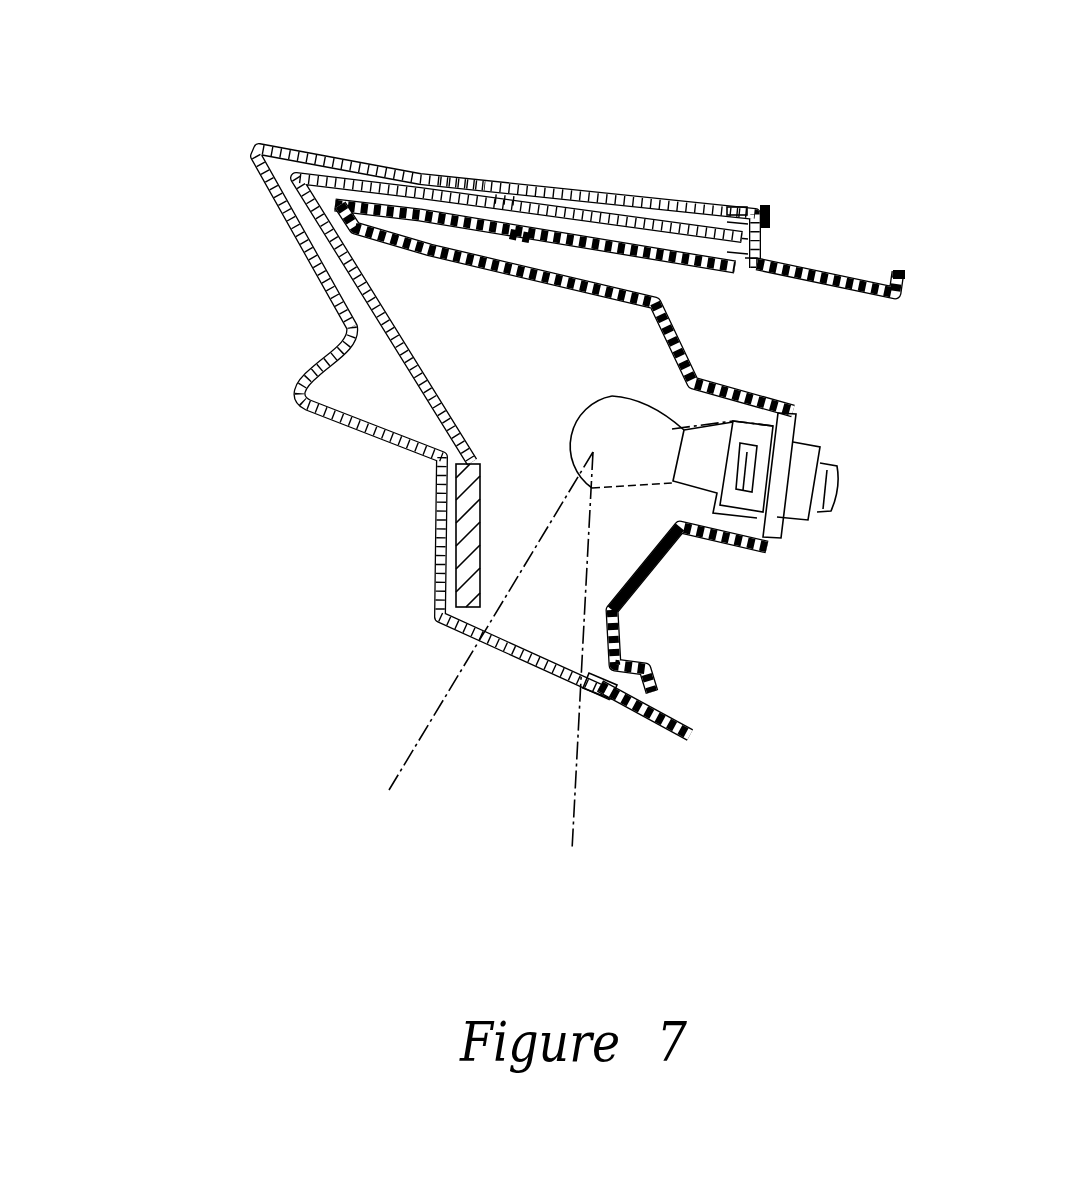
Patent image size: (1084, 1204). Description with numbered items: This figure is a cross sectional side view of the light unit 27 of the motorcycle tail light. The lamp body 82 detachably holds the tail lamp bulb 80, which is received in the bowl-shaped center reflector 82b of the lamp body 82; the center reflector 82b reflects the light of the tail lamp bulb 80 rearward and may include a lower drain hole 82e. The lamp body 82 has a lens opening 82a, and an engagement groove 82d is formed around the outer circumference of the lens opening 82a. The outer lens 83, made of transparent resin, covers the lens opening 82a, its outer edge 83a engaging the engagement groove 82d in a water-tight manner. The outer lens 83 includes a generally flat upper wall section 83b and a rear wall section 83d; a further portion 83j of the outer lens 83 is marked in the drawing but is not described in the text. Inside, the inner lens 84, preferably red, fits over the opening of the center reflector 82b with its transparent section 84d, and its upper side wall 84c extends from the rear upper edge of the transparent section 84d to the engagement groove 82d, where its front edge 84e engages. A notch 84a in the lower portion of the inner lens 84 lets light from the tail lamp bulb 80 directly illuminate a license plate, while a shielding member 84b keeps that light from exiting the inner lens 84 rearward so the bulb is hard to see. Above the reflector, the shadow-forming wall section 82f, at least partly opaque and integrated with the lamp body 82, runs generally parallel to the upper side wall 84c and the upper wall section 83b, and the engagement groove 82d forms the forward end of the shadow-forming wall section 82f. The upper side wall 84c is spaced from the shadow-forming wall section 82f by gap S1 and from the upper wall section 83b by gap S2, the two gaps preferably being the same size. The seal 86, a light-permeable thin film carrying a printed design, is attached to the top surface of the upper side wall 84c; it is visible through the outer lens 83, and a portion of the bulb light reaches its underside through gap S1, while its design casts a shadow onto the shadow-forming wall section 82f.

The light unit 27 is at (172, 212).
The tail lamp bulb 80 is at (612, 396).
The lamp body 82 is at (652, 488).
The lens opening 82a is at (600, 703).
The center reflector 82b is at (675, 330).
The engagement groove 82d is at (757, 258).
The lower drain hole 82e is at (650, 700).
The shadow-forming wall section 82f is at (630, 232).
The outer lens 83 is at (449, 372).
The outer edge 83a is at (733, 206).
The upper wall section 83b is at (537, 200).
The rear wall section 83d is at (307, 258).
The first plate bent portion 83j is at (295, 405).
The inner lens 84 is at (587, 338).
The notch 84a is at (440, 620).
The shielding member 84b is at (434, 520).
The upper side wall 84c is at (565, 195).
The transparent section 84d is at (340, 302).
The front edge 84e is at (745, 258).
The seal 86 is at (462, 178).
The gap S1 is at (520, 225).
The gap S2 is at (499, 145).